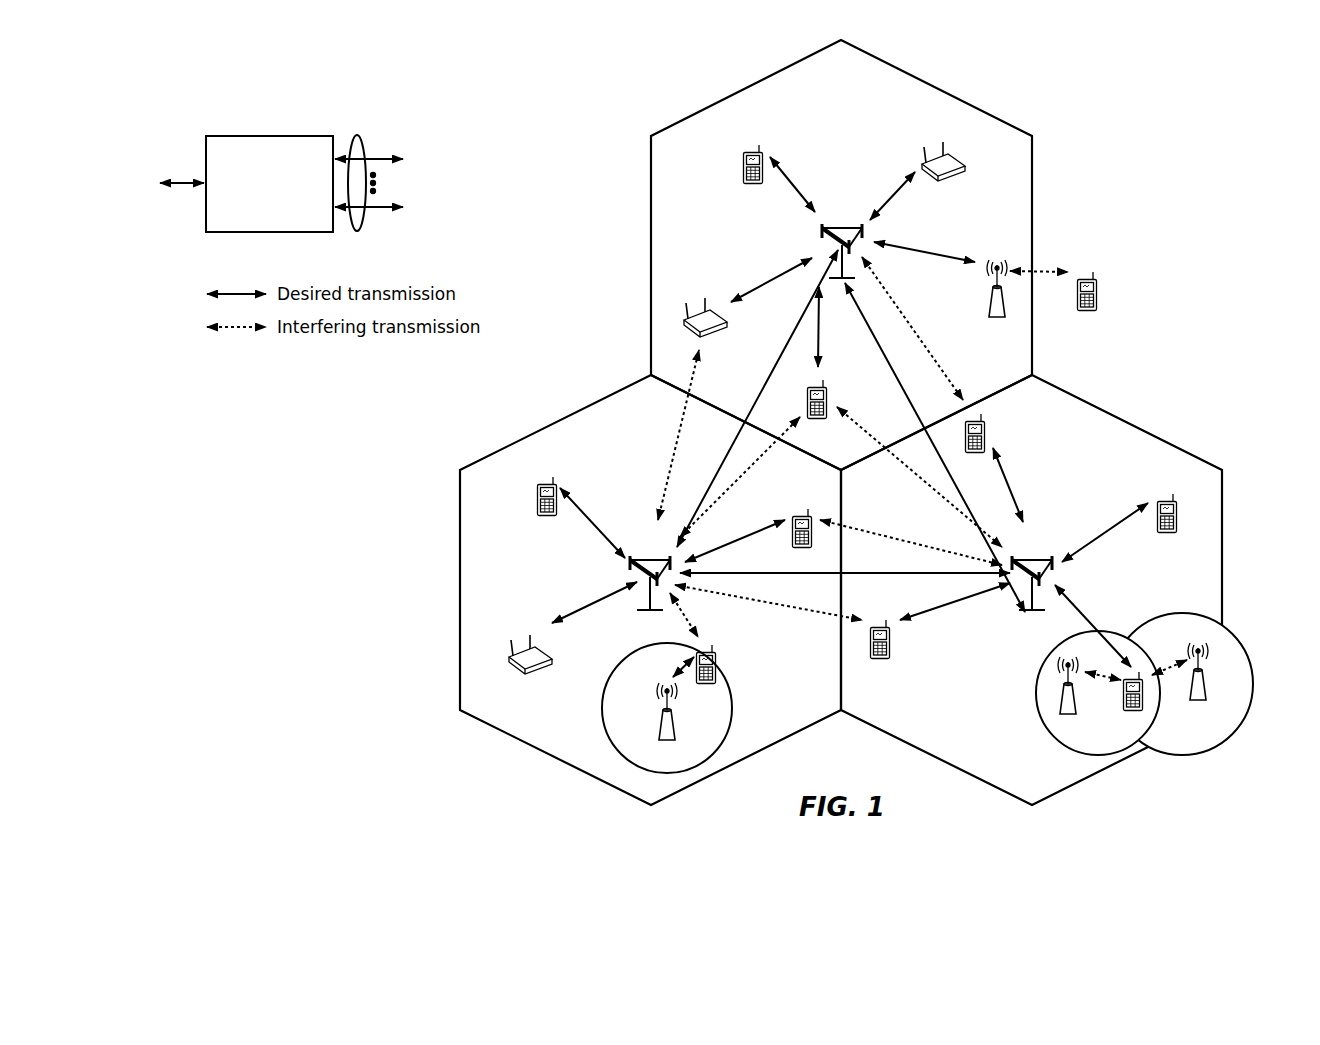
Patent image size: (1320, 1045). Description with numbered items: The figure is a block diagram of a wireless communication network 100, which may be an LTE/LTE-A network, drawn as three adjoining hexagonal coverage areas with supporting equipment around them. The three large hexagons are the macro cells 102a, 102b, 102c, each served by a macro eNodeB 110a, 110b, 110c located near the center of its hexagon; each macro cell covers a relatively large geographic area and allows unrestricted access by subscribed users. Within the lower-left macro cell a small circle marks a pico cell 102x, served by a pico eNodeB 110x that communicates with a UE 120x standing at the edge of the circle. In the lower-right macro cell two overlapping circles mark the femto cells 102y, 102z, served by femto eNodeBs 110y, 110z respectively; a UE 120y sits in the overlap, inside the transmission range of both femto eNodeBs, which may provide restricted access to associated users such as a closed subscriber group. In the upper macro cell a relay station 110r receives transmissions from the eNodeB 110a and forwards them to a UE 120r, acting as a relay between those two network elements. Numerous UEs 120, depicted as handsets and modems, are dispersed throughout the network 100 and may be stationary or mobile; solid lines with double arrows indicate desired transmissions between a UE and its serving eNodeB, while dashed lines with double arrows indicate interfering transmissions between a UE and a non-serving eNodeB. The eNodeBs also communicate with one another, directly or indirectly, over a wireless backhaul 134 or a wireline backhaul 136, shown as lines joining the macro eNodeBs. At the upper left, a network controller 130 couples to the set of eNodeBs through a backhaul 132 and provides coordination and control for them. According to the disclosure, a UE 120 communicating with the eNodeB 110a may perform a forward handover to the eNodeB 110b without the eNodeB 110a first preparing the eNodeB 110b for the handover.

The wireless communication network 100 is at (1162, 100).
The macro cell 102a is at (934, 89).
The macro cell 102b is at (563, 420).
The macro cell 102c is at (1119, 420).
The pico cell 102x is at (621, 663).
The femto cell 102y is at (1042, 667).
The femto cell 102z is at (1175, 614).
The macro eNodeB 110a is at (839, 225).
The macro eNodeB 110b is at (649, 561).
The macro eNodeB 110c is at (1030, 561).
The relay station 110r is at (988, 304).
The pico eNodeB 110x is at (678, 730).
The femto eNodeB 110y is at (1076, 711).
The femto eNodeB 110z is at (1206, 699).
The user equipment (UE) 120 is at (744, 161).
The UE 120r is at (1098, 305).
The UE 120x is at (717, 664).
The UE 120y is at (1124, 713).
The network controller 130 is at (262, 136).
The backhaul 132 is at (372, 136).
The wireless backhaul 134 is at (748, 401).
The wireline backhaul 136 is at (906, 402).